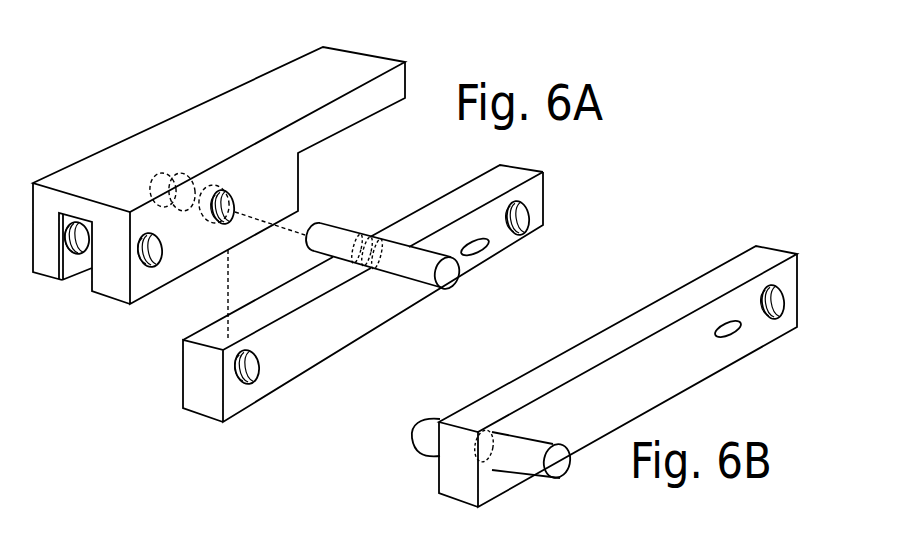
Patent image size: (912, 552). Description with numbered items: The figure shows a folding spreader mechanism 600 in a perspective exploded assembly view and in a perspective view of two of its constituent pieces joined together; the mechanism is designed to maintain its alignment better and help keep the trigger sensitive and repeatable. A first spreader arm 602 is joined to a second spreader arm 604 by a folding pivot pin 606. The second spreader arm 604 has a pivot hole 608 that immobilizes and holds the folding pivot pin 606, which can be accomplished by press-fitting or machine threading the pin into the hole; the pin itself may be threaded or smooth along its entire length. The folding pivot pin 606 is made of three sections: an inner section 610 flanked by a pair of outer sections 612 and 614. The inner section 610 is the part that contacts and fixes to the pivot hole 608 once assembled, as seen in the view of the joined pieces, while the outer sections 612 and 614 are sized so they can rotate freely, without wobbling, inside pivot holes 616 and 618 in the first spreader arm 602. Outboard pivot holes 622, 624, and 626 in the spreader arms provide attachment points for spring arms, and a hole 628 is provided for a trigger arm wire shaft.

In FIG. 6A, the folding spreader mechanism 600 is at (210, 56).
In FIG. 6A, the first spreader arm 602 is at (248, 129).
In FIG. 6A, the second spreader arm 604 is at (323, 346).
In FIG. 6B, the second spreader arm 604 is at (608, 412).
In FIG. 6A, the folding pivot pin 606 is at (448, 275).
In FIG. 6B, the folding pivot pin 606 is at (567, 463).
In FIG. 6A, the pivot hole 608 is at (253, 378).
In FIG. 6B, the pivot hole 608 is at (493, 472).
In FIG. 6A, the inner section 610 is at (373, 240).
In FIG. 6B, the inner section 610 is at (485, 435).
In FIG. 6A, the outer section 612 is at (325, 222).
In FIG. 6B, the outer section 612 is at (423, 418).
In FIG. 6A, the outer section 614 is at (416, 272).
In FIG. 6B, the outer section 614 is at (533, 474).
In FIG. 6A, the pivot hole 616 is at (177, 173).
In FIG. 6A, the pivot hole 618 is at (233, 203).
In FIG. 6A, the outboard pivot hole 622 is at (80, 252).
In FIG. 6A, the outboard pivot hole 624 is at (152, 266).
In FIG. 6A, the outboard pivot hole 626 is at (523, 235).
In FIG. 6B, the outboard pivot hole 626 is at (773, 318).
In FIG. 6A, the hole 628 is at (480, 244).
In FIG. 6B, the hole 628 is at (733, 331).